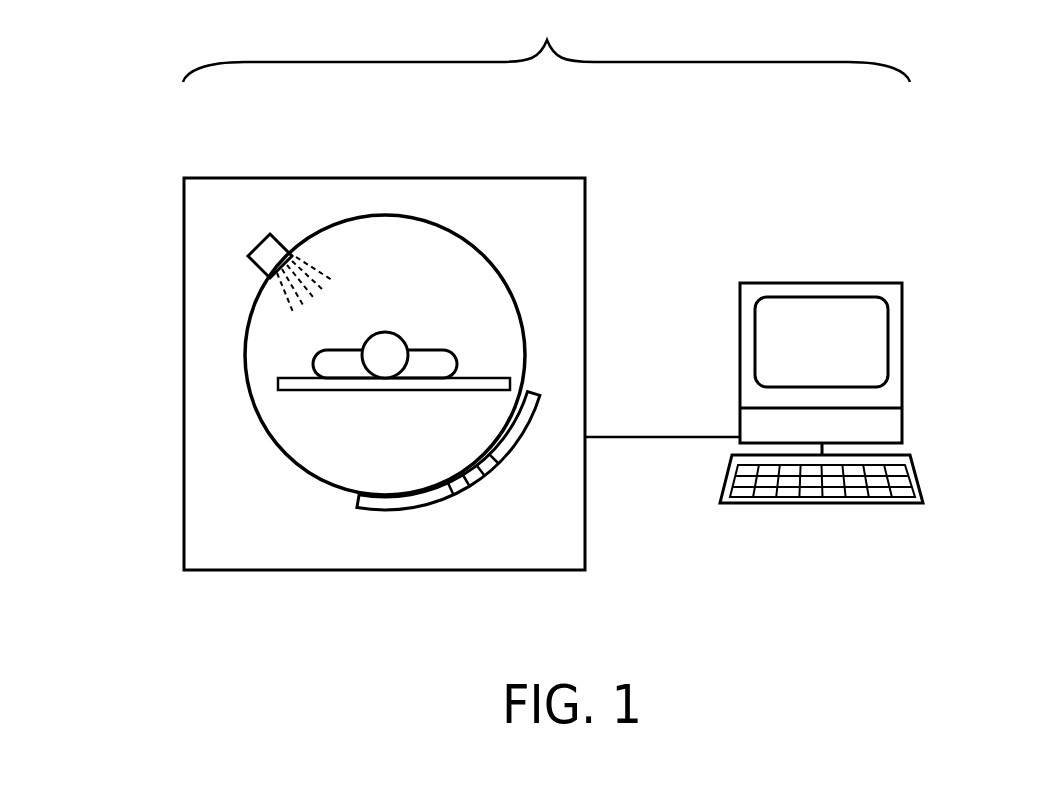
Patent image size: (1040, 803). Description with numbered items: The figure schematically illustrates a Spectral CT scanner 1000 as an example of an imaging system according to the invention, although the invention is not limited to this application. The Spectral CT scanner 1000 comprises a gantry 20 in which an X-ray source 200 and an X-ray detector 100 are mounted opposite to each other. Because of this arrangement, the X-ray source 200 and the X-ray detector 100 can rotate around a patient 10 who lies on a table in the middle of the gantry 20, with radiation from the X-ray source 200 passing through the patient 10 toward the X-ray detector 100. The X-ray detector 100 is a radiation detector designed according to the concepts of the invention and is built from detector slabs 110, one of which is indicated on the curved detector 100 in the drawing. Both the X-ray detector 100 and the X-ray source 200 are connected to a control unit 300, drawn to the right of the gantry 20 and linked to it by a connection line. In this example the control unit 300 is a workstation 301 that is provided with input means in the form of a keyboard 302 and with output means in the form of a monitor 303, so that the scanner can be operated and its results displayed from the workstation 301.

The Spectral CT scanner 1000 is at (546, 45).
The gantry 20 is at (511, 200).
The patient 10 is at (418, 325).
The X-ray source 200 is at (257, 218).
The X-ray detector 100 is at (405, 538).
The detector slab 110 is at (467, 478).
The control unit 300 is at (864, 342).
The workstation 301 is at (893, 430).
The keyboard 302 is at (912, 480).
The monitor 303 is at (893, 343).